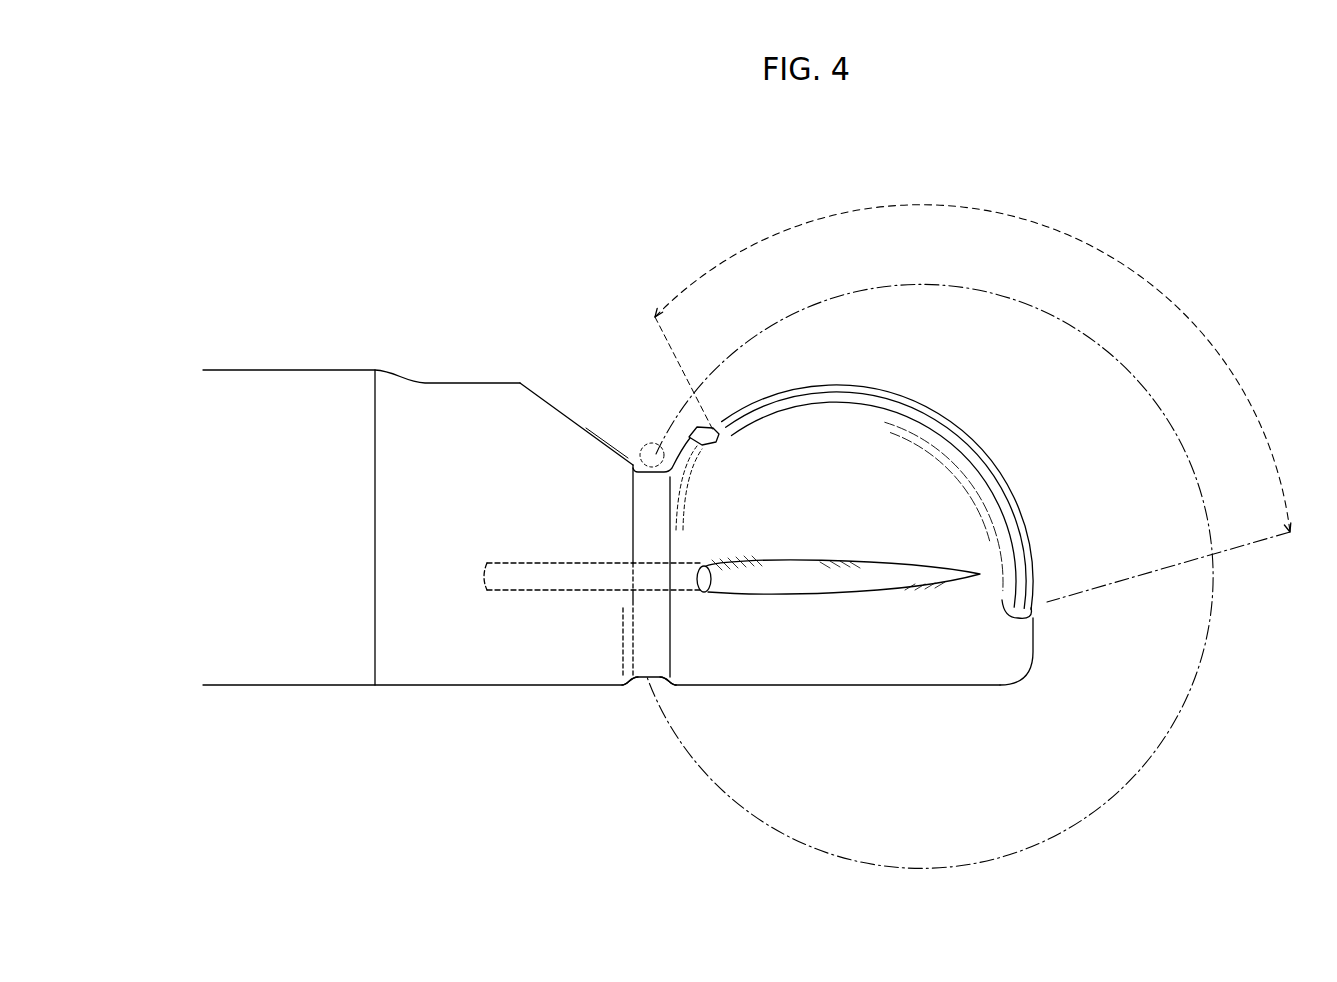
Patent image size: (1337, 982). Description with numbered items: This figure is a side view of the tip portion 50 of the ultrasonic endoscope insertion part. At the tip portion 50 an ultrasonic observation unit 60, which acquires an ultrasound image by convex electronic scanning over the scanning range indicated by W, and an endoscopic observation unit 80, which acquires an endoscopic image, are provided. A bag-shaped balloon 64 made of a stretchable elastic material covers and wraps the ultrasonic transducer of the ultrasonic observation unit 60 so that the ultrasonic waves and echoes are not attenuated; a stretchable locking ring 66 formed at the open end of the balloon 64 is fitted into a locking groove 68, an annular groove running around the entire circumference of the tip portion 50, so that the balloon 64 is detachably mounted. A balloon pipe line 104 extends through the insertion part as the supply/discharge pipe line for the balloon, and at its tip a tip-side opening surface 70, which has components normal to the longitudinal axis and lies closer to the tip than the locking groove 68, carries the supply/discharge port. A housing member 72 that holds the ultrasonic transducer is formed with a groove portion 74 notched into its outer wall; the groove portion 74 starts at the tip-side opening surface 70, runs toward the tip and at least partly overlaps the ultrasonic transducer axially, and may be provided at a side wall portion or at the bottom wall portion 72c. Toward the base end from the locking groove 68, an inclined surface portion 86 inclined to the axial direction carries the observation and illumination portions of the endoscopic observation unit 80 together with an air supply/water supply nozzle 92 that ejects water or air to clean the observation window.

The tip portion 50 is at (1134, 225).
The ultrasonic observation unit 60 is at (968, 428).
The balloon 64 is at (930, 285).
The locking ring 66 is at (646, 698).
The locking groove 68 is at (660, 698).
The tip-side opening surface 70 is at (718, 578).
The housing member 72 is at (912, 674).
The bottom wall portion 72c is at (818, 689).
The groove portion 74 is at (845, 583).
The endoscopic observation unit 80 is at (688, 358).
The inclined surface portion 86 is at (540, 406).
The air supply/water supply nozzle 92 is at (604, 436).
The balloon pipe line 104 is at (532, 596).